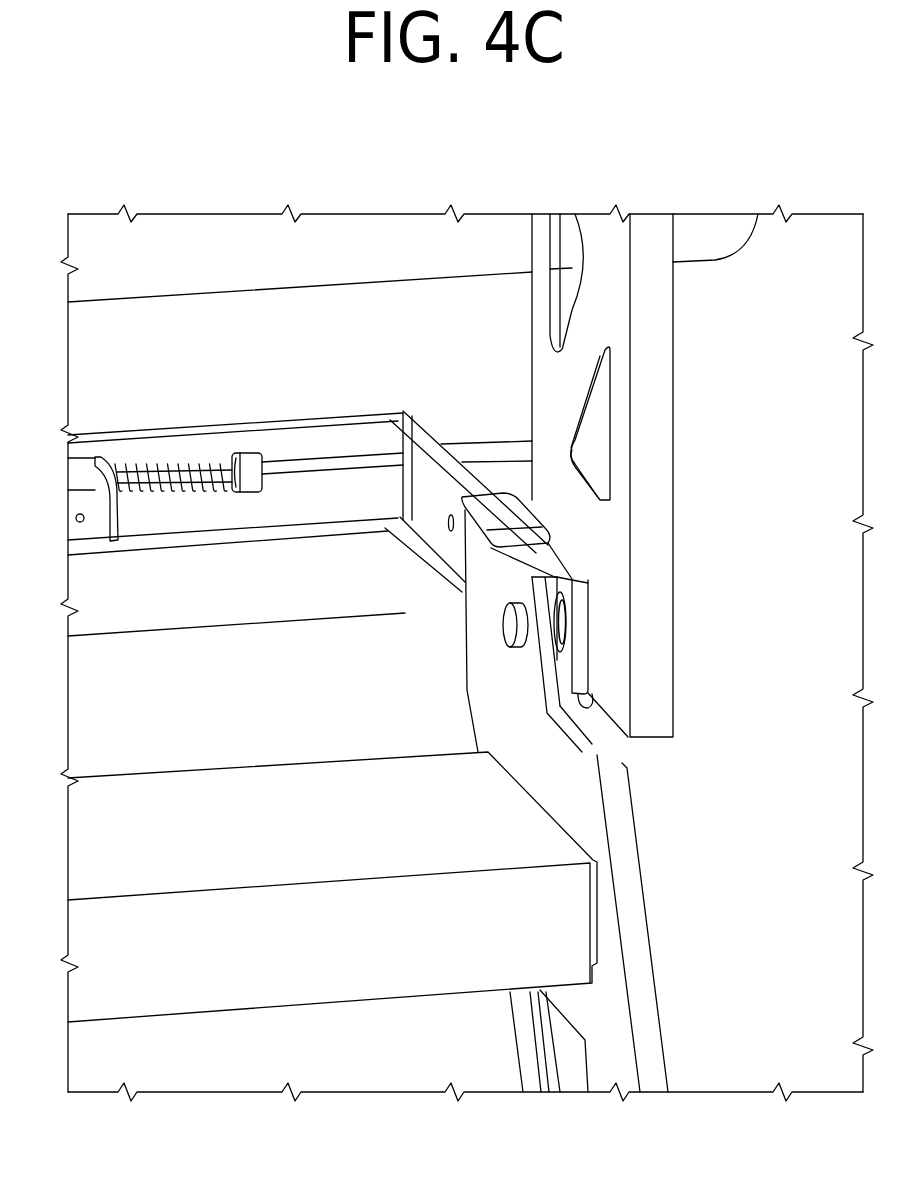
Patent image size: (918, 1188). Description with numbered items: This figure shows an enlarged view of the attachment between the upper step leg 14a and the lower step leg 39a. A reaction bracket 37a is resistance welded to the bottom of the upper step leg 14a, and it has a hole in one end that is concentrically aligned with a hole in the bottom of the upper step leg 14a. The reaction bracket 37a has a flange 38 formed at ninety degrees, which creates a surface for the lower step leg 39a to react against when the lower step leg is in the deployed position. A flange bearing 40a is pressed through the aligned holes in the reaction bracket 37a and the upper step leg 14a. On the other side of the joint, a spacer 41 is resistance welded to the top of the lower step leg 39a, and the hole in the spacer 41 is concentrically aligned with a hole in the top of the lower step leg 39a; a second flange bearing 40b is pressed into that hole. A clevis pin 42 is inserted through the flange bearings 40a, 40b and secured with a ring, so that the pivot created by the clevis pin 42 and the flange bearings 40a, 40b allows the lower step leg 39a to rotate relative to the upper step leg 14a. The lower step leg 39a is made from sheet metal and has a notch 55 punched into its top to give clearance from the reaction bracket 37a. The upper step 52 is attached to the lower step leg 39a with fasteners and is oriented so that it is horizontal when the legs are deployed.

The upper step leg 14a is at (623, 360).
The flange 38 is at (505, 513).
The spacer 41 is at (533, 562).
The clevis pin 42 is at (508, 627).
The flange bearing 40a is at (562, 618).
The flange bearing 40b is at (557, 633).
The reaction bracket 37a is at (583, 665).
The notch 55 is at (575, 734).
The upper step 52 is at (423, 850).
The lower step leg 39a is at (603, 1023).